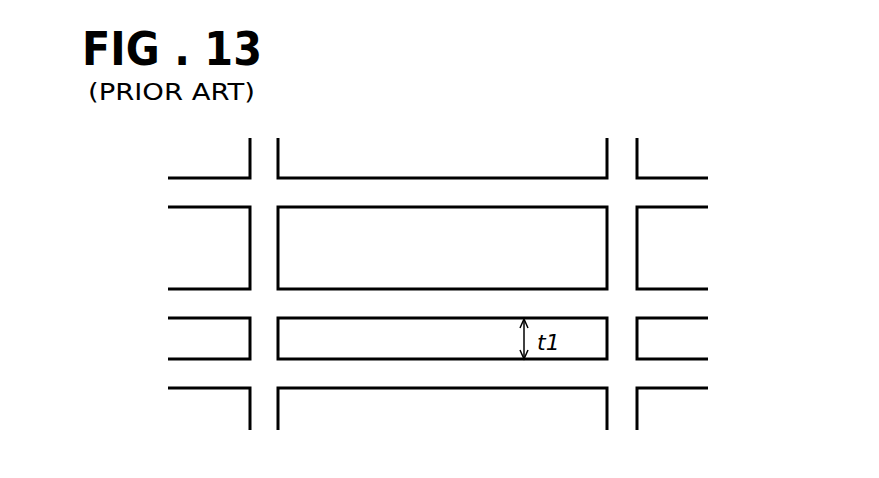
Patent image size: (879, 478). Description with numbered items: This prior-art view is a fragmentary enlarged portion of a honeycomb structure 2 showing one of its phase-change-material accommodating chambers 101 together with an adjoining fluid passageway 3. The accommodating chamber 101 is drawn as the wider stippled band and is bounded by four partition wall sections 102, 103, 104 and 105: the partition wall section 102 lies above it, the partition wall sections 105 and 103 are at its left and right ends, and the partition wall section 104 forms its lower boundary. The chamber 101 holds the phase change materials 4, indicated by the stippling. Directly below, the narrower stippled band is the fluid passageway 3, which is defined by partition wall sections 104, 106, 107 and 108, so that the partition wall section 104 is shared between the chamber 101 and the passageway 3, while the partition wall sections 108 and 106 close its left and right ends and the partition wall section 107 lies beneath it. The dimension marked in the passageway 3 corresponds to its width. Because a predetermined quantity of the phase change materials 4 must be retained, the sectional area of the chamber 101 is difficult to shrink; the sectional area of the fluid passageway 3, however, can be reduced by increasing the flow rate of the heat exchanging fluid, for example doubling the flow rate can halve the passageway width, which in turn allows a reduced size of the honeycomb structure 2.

The honeycomb structure 2 is at (664, 157).
The fluid passageway 3 is at (445, 358).
The phase change materials 4 is at (466, 250).
The phase-change-material accommodating chamber 101 is at (398, 208).
The partition wall section 102 is at (534, 196).
The partition wall section 103 is at (620, 253).
The partition wall section 104 is at (410, 305).
The partition wall section 105 is at (265, 252).
The partition wall section 106 is at (623, 338).
The partition wall section 107 is at (518, 373).
The partition wall section 108 is at (262, 337).